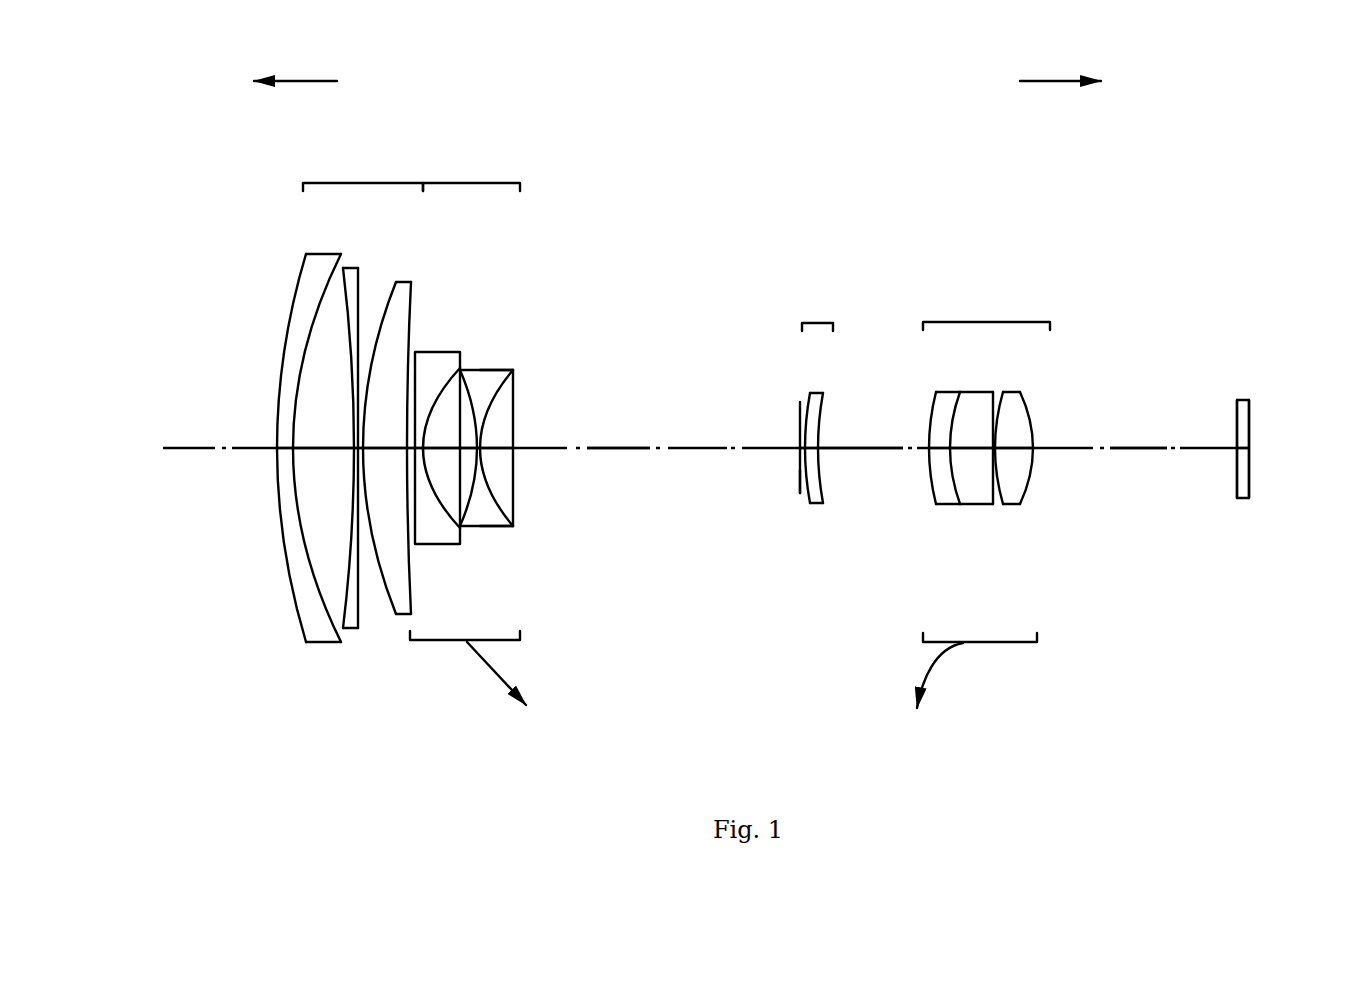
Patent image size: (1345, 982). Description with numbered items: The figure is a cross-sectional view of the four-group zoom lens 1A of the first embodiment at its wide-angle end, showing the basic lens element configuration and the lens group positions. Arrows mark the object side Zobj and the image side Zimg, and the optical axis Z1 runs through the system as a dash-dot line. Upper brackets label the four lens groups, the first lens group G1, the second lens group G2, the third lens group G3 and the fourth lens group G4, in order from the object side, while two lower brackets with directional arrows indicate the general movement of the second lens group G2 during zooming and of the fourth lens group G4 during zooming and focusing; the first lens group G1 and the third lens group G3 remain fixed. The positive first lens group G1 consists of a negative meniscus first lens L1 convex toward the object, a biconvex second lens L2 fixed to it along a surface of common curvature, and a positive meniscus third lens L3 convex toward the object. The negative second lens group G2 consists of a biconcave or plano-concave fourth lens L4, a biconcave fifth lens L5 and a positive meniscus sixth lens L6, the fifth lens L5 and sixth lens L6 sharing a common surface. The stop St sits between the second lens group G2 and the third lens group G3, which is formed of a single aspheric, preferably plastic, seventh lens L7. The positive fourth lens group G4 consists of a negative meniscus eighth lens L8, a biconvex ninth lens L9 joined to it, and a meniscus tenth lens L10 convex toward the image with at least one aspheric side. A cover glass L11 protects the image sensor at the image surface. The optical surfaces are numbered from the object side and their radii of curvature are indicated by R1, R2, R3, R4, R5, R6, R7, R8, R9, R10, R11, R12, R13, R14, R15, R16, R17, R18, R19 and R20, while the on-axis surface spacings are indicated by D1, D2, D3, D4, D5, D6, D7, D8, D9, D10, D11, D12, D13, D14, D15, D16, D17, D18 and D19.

The zoom lens 1A is at (1238, 250).
The object side Zobj is at (305, 77).
The image side Zimg is at (1060, 77).
The optical axis Z1 is at (183, 452).
The first lens group G1 is at (361, 437).
The second lens group G2 is at (498, 425).
The third lens group G3 is at (818, 441).
The fourth lens group G4 is at (996, 498).
The stop St is at (798, 418).
The first lens L1 is at (325, 262).
The second lens L2 is at (352, 276).
The third lens L3 is at (401, 294).
The fourth lens L4 is at (445, 362).
The fifth lens L5 is at (480, 386).
The sixth lens L6 is at (510, 386).
The seventh lens L7 is at (814, 405).
The eighth lens L8 is at (945, 400).
The ninth lens L9 is at (975, 400).
The tenth lens L10 is at (1008, 400).
The cover glass L11 is at (1243, 410).
The radius of curvature R1 is at (295, 603).
The radius of curvature R2 is at (333, 590).
The radius of curvature R3 is at (357, 613).
The radius of curvature R4 is at (366, 593).
The radius of curvature R5 is at (405, 630).
The radius of curvature R6 is at (413, 547).
The radius of curvature R7 is at (455, 530).
The radius of curvature R8 is at (470, 525).
The radius of curvature R9 is at (487, 485).
The radius of curvature R10 is at (514, 462).
The radius of curvature R11 is at (799, 492).
The radius of curvature R12 is at (811, 503).
The radius of curvature R13 is at (824, 503).
The radius of curvature R14 is at (935, 506).
The radius of curvature R15 is at (957, 506).
The radius of curvature R16 is at (992, 506).
The radius of curvature R17 is at (1004, 506).
The radius of curvature R18 is at (1030, 497).
The radius of curvature R19 is at (1237, 480).
The radius of curvature R20 is at (1250, 480).
The on-axis surface spacing D1 is at (282, 442).
The on-axis surface spacing D2 is at (323, 464).
The on-axis surface spacing D3 is at (354, 440).
The on-axis surface spacing D4 is at (375, 464).
The on-axis surface spacing D5 is at (405, 440).
The on-axis surface spacing D6 is at (418, 460).
The on-axis surface spacing D7 is at (450, 465).
The on-axis surface spacing D8 is at (507, 412).
The on-axis surface spacing D9 is at (500, 442).
The on-axis surface spacing D10 is at (632, 464).
The on-axis surface spacing D11 is at (796, 437).
The on-axis surface spacing D12 is at (830, 436).
The on-axis surface spacing D13 is at (926, 461).
The on-axis surface spacing D14 is at (924, 433).
The on-axis surface spacing D15 is at (926, 470).
The on-axis surface spacing D16 is at (1032, 434).
The on-axis surface spacing D17 is at (1035, 468).
The on-axis surface spacing D18 is at (1138, 464).
The on-axis surface spacing D19 is at (1238, 444).